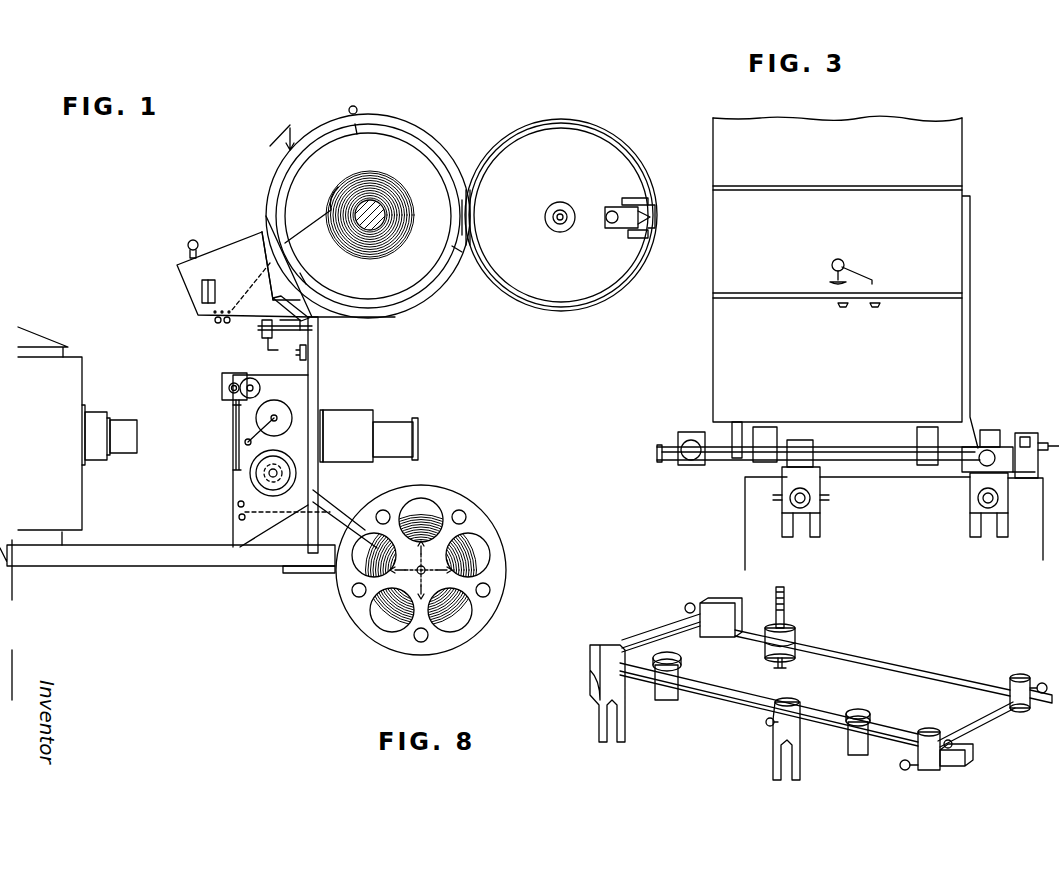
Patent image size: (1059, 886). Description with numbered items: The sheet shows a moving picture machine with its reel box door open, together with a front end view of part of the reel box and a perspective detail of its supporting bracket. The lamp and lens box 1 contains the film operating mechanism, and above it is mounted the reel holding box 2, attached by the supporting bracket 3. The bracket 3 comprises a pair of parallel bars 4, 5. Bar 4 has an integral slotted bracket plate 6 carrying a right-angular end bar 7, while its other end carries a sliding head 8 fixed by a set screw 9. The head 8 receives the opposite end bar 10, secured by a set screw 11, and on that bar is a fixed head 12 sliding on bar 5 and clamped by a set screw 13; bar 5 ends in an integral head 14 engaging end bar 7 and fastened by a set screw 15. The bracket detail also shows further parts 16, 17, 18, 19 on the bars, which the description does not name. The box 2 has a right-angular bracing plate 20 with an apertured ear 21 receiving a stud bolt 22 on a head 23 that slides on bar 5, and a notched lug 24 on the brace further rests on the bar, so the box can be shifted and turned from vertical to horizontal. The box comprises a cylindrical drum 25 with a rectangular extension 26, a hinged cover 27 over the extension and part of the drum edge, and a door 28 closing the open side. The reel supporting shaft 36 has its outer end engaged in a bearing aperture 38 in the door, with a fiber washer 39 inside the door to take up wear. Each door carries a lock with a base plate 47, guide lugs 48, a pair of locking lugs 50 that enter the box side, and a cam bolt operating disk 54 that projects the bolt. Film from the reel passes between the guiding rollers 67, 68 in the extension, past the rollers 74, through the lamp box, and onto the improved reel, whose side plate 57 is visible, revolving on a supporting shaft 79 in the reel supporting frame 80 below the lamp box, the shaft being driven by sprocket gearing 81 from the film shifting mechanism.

In FIG. 1, the lamp and lens box 1 is at (225, 482).
In FIG. 3, the lamp and lens box 1 is at (1035, 545).
In FIG. 1, the reel holding box 2 is at (266, 185).
In FIG. 3, the reel holding box 2 is at (712, 350).
In FIG. 1, the supporting bracket 3 is at (320, 330).
In FIG. 8, the supporting bracket 3 is at (890, 655).
In FIG. 8, the bar 4 is at (728, 706).
In FIG. 3, the bar 5 is at (900, 456).
In FIG. 8, the bar 5 is at (935, 672).
In FIG. 1, the slotted bracket plate 6 is at (318, 364).
In FIG. 3, the slotted bracket plate 6 is at (975, 525).
In FIG. 8, the slotted bracket plate 6 is at (628, 735).
In FIG. 1, the end bar 7 is at (268, 330).
In FIG. 3, the end bar 7 is at (1024, 433).
In FIG. 8, the end bar 7 is at (650, 640).
In FIG. 8, the head 8 is at (932, 733).
In FIG. 8, the set screw 9 is at (905, 770).
In FIG. 3, the end bar 10 is at (1048, 418).
In FIG. 8, the end bar 10 is at (975, 722).
In FIG. 8, the set screw 11 is at (952, 746).
In FIG. 3, the head 12 is at (690, 432).
In FIG. 8, the head 12 is at (1018, 678).
In FIG. 3, the set screw 13 is at (692, 455).
In FIG. 8, the set screw 13 is at (1042, 683).
In FIG. 1, the head 14 is at (250, 330).
In FIG. 3, the head 14 is at (1033, 508).
In FIG. 8, the head 14 is at (715, 603).
In FIG. 8, the set screw 15 is at (685, 606).
In FIG. 3, the forked support 16 is at (790, 525).
In FIG. 8, the forked support 16 is at (773, 760).
In FIG. 8, the screw 17 is at (766, 724).
In FIG. 3, the slide 18 is at (760, 465).
In FIG. 8, the slide 18 is at (665, 700).
In FIG. 3, the cap 19 is at (775, 445).
In FIG. 8, the cap 19 is at (672, 655).
In FIG. 1, the bracing plate 20 is at (260, 240).
In FIG. 3, the bracing plate 20 is at (965, 420).
In FIG. 1, the apertured ear 21 is at (290, 318).
In FIG. 3, the apertured ear 21 is at (988, 445).
In FIG. 8, the stud bolt 22 is at (786, 610).
In FIG. 3, the head 23 is at (968, 472).
In FIG. 8, the head 23 is at (798, 642).
In FIG. 3, the notched lug 24 is at (737, 440).
In FIG. 1, the drum 25 is at (410, 124).
In FIG. 1, the rectangular extension 26 is at (195, 268).
In FIG. 3, the rectangular extension 26 is at (874, 356).
In FIG. 1, the hinged cover 27 is at (281, 130).
In FIG. 1, the door 28 is at (570, 140).
In FIG. 1, the reel supporting shaft 36 is at (375, 205).
In FIG. 1, the bearing aperture 38 is at (563, 208).
In FIG. 1, the fiber washer 39 is at (550, 225).
In FIG. 1, the guide or base plate 47 is at (608, 228).
In FIG. 1, the guide lugs 48 is at (638, 198).
In FIG. 1, the locking lugs 50 is at (656, 205).
In FIG. 3, the locking lugs 50 is at (866, 310).
In FIG. 1, the cam bolt operating disk 54 is at (612, 209).
In FIG. 1, the side plate 57 is at (375, 635).
In FIG. 1, the film guiding roller 67 is at (262, 330).
In FIG. 1, the film guiding roller 68 is at (230, 320).
In FIG. 1, the film guiding rollers 74 is at (202, 291).
In FIG. 1, the supporting shaft 79 is at (440, 562).
In FIG. 1, the reel supporting frame 80 is at (332, 575).
In FIG. 1, the sprocket gearing 81 is at (330, 498).